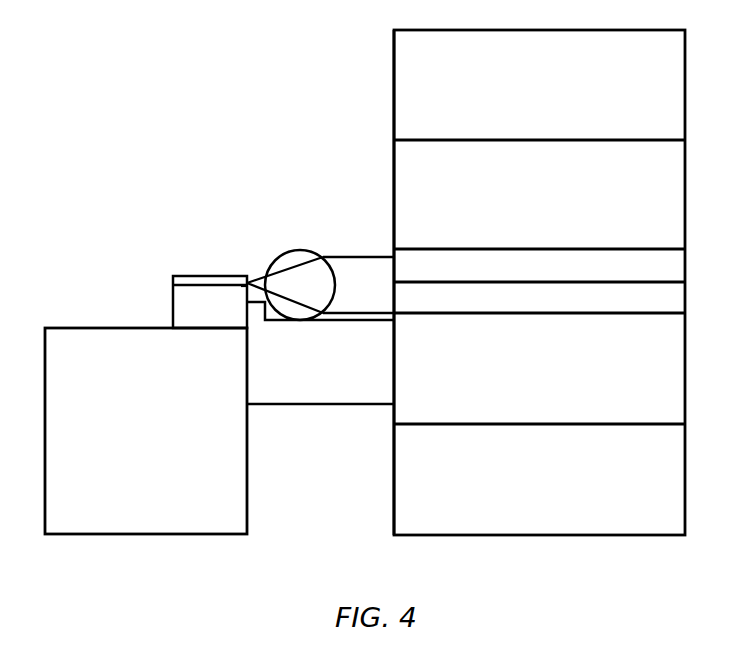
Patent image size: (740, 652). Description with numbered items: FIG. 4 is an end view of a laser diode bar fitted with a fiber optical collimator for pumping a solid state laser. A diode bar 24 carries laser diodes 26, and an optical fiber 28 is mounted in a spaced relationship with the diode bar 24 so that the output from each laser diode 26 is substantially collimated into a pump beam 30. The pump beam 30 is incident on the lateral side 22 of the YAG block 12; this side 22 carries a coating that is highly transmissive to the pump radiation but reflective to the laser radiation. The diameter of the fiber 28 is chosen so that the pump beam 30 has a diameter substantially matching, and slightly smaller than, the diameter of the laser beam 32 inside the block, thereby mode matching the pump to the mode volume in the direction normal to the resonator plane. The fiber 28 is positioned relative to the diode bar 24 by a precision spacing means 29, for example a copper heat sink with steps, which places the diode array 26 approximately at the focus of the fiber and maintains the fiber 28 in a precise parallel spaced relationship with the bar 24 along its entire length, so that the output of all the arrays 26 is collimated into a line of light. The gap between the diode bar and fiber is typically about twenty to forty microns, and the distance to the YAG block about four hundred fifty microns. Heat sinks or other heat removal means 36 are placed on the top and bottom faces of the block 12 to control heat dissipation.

The YAG block 12 is at (618, 211).
The lateral side 22 is at (393, 205).
The diode bar 24 is at (187, 308).
The laser diode 26 is at (212, 357).
The optical fiber 28 is at (266, 258).
The precision spacing means 29 is at (264, 404).
The pump beam 30 is at (366, 257).
The laser beam 32 is at (478, 249).
The heat removal means 36 is at (553, 97).